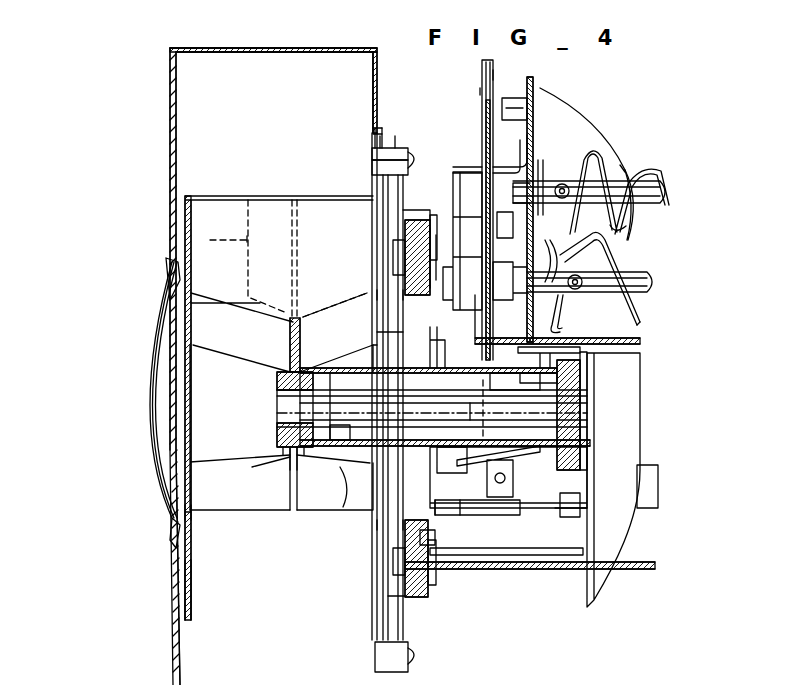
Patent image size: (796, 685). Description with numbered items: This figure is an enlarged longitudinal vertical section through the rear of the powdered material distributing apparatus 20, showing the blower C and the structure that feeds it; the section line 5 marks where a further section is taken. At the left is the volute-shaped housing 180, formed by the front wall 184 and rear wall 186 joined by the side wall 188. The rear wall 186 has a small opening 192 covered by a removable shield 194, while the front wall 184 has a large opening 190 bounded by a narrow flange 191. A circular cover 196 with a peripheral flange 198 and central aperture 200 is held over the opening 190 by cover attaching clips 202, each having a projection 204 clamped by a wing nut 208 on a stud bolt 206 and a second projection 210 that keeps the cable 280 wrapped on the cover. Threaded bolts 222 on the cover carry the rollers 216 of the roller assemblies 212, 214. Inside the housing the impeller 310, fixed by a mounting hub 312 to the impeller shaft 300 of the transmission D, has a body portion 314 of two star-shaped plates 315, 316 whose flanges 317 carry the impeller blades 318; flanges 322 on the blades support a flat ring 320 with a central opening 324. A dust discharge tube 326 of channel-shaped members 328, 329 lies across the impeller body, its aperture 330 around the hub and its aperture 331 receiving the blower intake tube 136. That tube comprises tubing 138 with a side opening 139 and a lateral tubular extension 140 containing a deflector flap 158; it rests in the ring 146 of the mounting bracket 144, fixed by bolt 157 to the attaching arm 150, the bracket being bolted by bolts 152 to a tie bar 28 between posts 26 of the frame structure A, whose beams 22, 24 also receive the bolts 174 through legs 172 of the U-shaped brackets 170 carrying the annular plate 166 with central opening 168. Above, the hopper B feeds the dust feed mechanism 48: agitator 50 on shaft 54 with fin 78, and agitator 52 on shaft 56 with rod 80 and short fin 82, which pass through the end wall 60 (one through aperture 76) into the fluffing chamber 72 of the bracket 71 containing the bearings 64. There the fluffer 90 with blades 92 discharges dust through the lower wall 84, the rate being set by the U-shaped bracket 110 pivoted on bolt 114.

The volute-shaped housing 180 is at (168, 177).
The blower C is at (168, 130).
The side wall 188 is at (266, 48).
The rear wall 186 is at (178, 70).
The front wall 184 is at (373, 72).
The impeller blades 318 is at (208, 196).
The impeller 310 is at (243, 196).
The radially-extending flanges 317 is at (272, 534).
The body portion 314 is at (280, 323).
The star-shaped plate 315 is at (288, 336).
The star-shaped plate 316 is at (290, 352).
The mounting hub 312 is at (277, 380).
The aperture 330 is at (284, 414).
The dust discharge tube 326 is at (276, 428).
The channel-shaped member 328 is at (300, 466).
The channel-shaped member 329 is at (281, 486).
The flanges 322 is at (196, 352).
The central opening 324 is at (185, 514).
The opening 192 is at (175, 308).
The removable shield 194 is at (150, 421).
The flat ring 320 is at (191, 570).
The opening 190 is at (372, 187).
The circular cover 196 is at (398, 205).
The projection 204 is at (403, 188).
The peripheral flange 198 is at (378, 170).
The stud bolt 206 is at (378, 160).
The wing nut 208 is at (415, 155).
The cover attaching clips 202 is at (408, 152).
The second projection 210 is at (384, 148).
The cable 280 is at (373, 130).
The threaded bolts 222 is at (405, 238).
The roller 216 is at (405, 258).
The roller assemblies 212 is at (405, 250).
The flange 191 is at (403, 220).
The roller assemblies 214 is at (400, 596).
The central aperture 200 is at (400, 292).
The legs 172 is at (400, 332).
The tie bars 28 is at (370, 346).
The post 26 is at (495, 66).
The section line 5 is at (478, 93).
The frame structure A is at (500, 78).
The inverted U-shaped bracket 110 is at (532, 92).
The bolt 114 is at (528, 112).
The end wall 60 is at (534, 132).
The bracket 71 is at (525, 162).
The rear bearings 64 is at (462, 241).
The blades 92 is at (497, 218).
The powder fluffing chamber 72 is at (500, 262).
The annular plate 166 is at (424, 222).
The lateral tubular extension 140 is at (480, 365).
The fluffer 90 is at (540, 182).
The support shaft 54 is at (668, 192).
The spiral dust agitator 50 is at (598, 165).
The powdered material distributing apparatus 20 is at (635, 115).
The material supply hopper B is at (630, 165).
The spirally trending fin 78 is at (624, 220).
The aperture 76 is at (550, 260).
The short fin 82 is at (630, 263).
The spiral dust agitator 52 is at (630, 266).
The support shaft 56 is at (652, 285).
The spirally trending rod 80 is at (570, 306).
The dust feed mechanism 48 is at (575, 330).
The lower wall 84 is at (542, 372).
The transmission D is at (636, 427).
The horizontal beams 22 is at (650, 480).
The tubing 138 is at (394, 375).
The annular band or ring 146 is at (443, 436).
The U-shaped brackets 170 is at (432, 408).
The aperture 331 is at (350, 442).
The bolts 152 is at (490, 376).
The side opening 139 is at (483, 414).
The impeller shaft 300 is at (472, 410).
The deflector flap 158 is at (565, 400).
The bolt 157 is at (570, 448).
The blower intake tube 136 is at (545, 380).
The mounting bracket 144 is at (492, 461).
The bolts 174 is at (580, 503).
The horizontal beams 24 is at (524, 562).
The intake tube attaching arm 150 is at (450, 506).
The central opening 168 is at (428, 536).